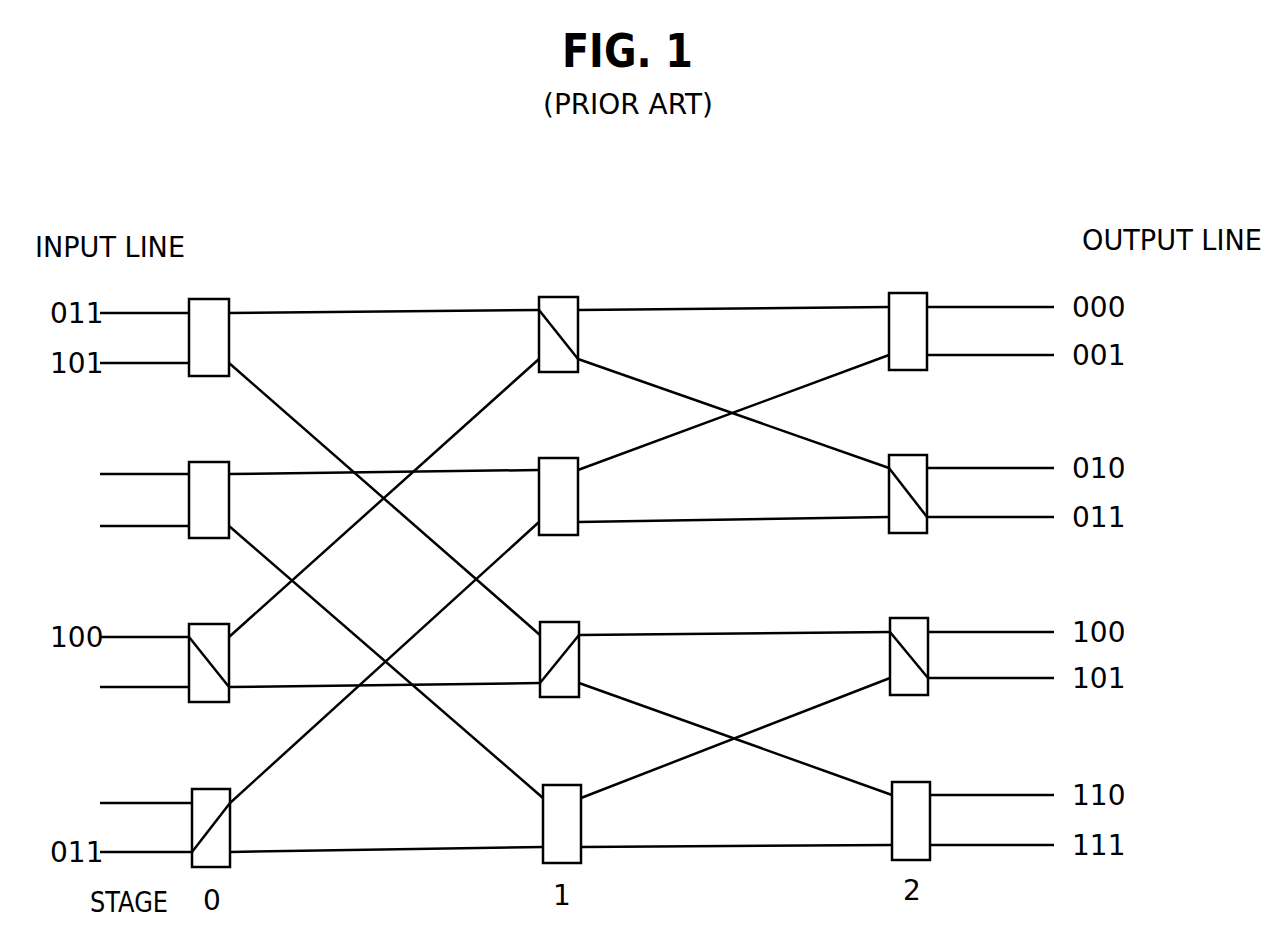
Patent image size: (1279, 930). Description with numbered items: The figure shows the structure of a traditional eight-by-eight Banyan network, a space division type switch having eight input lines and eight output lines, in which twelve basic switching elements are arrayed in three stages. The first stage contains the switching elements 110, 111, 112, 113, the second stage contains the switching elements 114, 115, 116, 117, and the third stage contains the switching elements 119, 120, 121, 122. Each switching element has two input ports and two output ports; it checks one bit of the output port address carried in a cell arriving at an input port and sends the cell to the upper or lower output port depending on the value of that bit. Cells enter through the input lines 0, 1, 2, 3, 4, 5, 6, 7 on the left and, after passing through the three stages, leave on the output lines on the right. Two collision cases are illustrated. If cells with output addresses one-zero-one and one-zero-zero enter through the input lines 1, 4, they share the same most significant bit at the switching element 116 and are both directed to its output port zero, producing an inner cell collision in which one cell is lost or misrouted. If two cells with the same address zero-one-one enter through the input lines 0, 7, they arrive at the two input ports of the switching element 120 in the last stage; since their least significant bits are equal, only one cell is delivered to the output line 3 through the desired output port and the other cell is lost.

The input line 0 is at (577, 291).
The input line 1 is at (577, 340).
The input line 2 is at (577, 452).
The output line 3 is at (577, 502).
The input line 4 is at (577, 615).
The input line 5 is at (577, 663).
The input line 6 is at (577, 780).
The input line 7 is at (577, 829).
The switching element 110 is at (234, 312).
The switching element 111 is at (234, 474).
The switching element 112 is at (234, 637).
The switching element 113 is at (237, 802).
The switching element 114 is at (584, 309).
The switching element 115 is at (584, 471).
The switching element 116 is at (585, 634).
The switching element 117 is at (588, 798).
The switching element 119 is at (934, 306).
The switching element 120 is at (934, 468).
The switching element 121 is at (935, 631).
The switching element 122 is at (937, 795).